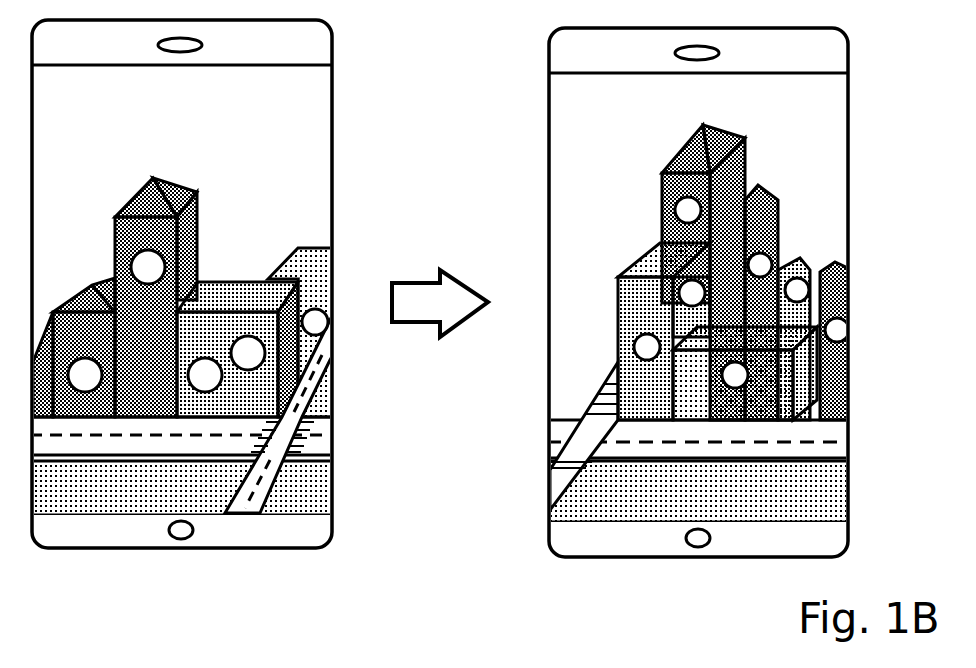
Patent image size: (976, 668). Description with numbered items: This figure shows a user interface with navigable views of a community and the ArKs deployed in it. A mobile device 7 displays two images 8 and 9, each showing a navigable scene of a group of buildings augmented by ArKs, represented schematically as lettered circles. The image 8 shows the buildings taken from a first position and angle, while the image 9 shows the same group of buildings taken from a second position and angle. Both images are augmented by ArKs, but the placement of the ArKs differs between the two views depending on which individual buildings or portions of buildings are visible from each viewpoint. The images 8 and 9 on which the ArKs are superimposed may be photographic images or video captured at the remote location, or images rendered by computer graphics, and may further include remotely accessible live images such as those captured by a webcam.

The mobile device 7 is at (538, 485).
The image 8 is at (267, 197).
The image 9 is at (585, 216).